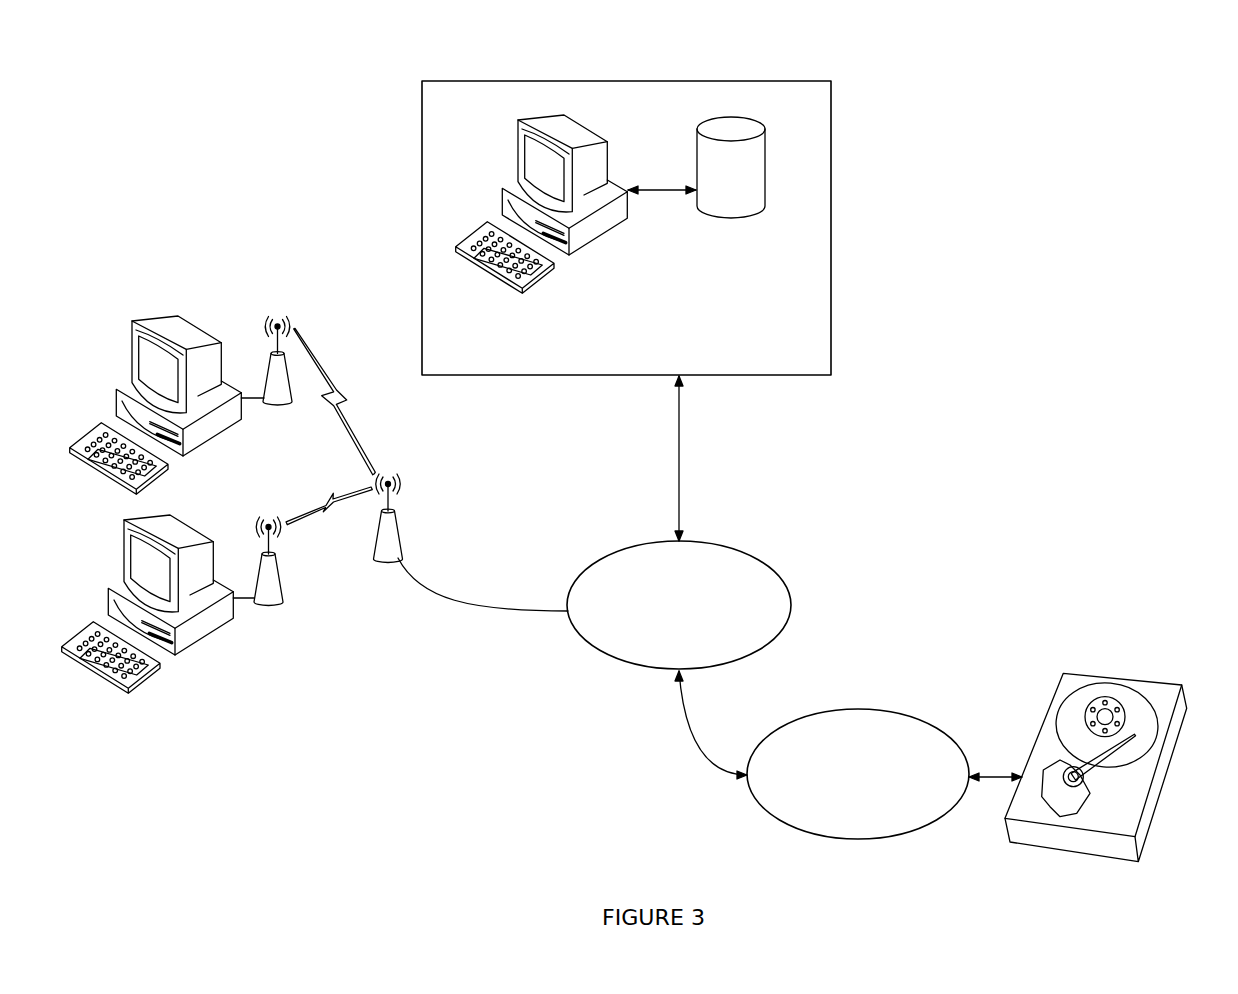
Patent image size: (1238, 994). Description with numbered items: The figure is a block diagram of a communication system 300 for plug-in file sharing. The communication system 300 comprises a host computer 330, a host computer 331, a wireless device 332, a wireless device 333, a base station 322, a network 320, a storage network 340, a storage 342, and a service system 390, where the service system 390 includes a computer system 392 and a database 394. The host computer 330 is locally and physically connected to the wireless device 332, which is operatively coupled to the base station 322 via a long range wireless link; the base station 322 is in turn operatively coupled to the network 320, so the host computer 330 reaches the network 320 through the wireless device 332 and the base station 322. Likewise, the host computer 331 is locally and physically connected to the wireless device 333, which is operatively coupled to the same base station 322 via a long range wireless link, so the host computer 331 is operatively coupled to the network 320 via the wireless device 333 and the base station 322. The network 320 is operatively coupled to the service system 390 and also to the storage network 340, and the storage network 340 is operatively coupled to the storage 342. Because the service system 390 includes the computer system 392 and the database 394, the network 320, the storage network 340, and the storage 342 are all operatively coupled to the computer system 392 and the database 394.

The communication system 300 is at (200, 61).
The service system 390 is at (422, 125).
The computer system 392 is at (604, 140).
The database 394 is at (750, 179).
The network 320 is at (698, 629).
The base station 322 is at (394, 559).
The host computer 330 is at (140, 518).
The host computer 331 is at (145, 319).
The wireless device 332 is at (271, 602).
The wireless device 333 is at (280, 403).
The storage network 340 is at (876, 818).
The storage 342 is at (1123, 679).